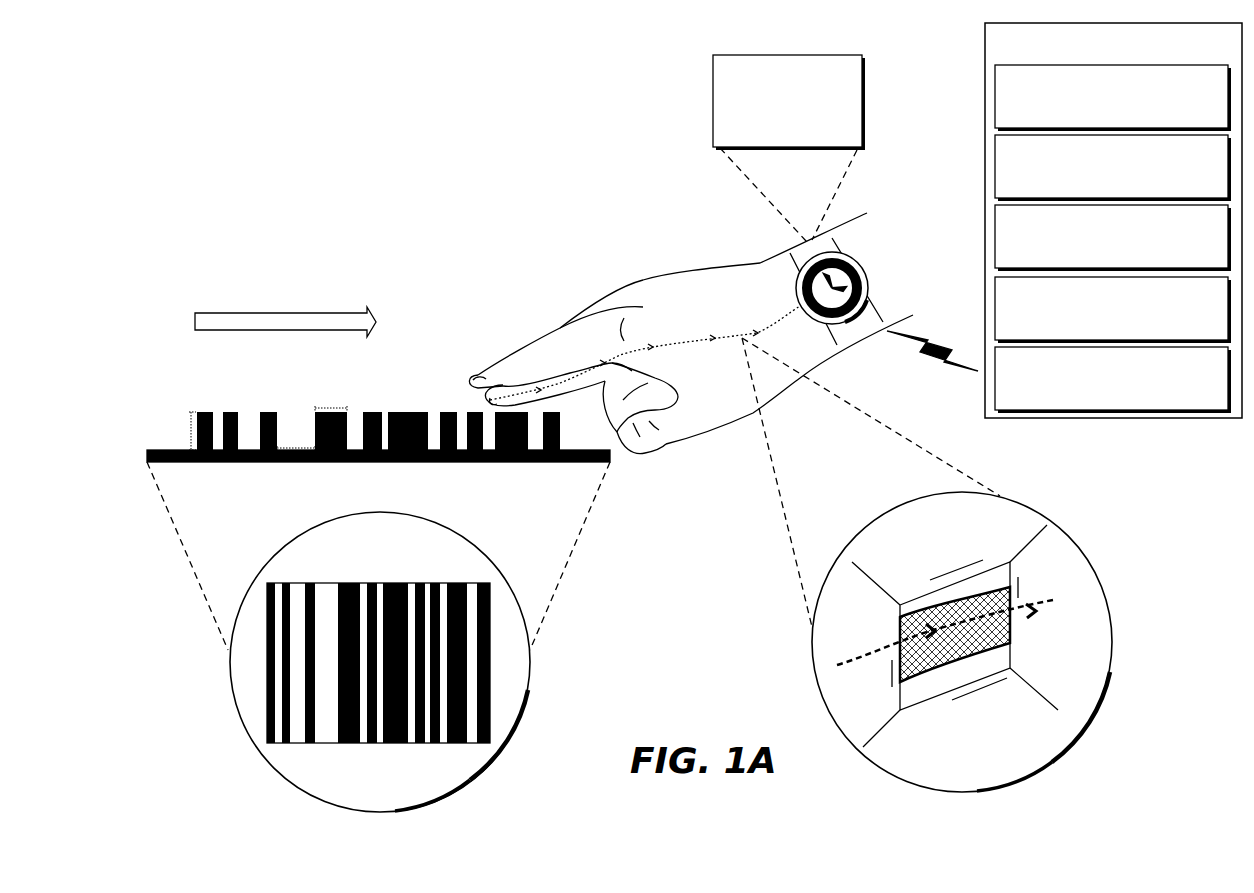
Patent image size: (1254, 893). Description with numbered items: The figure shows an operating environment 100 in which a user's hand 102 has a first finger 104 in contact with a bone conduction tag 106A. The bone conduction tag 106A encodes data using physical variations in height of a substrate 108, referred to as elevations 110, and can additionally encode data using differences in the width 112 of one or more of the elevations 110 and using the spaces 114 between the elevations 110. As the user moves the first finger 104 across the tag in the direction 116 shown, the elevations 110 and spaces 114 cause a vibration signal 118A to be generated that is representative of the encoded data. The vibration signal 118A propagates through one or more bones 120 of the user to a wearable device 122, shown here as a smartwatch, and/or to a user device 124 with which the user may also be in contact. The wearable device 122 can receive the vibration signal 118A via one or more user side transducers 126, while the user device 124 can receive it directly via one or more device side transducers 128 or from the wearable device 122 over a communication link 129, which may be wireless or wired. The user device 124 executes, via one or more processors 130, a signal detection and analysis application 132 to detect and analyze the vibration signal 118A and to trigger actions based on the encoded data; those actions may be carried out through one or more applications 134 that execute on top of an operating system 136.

The operating environment 100 is at (210, 64).
The user's hand 102 is at (717, 270).
The first finger 104 is at (567, 326).
The bone conduction tag 106A is at (182, 358).
The substrate 108 is at (148, 453).
The elevations 110 is at (174, 430).
The width 112 is at (341, 389).
The spaces 114 is at (295, 428).
The direction 116 is at (325, 313).
The vibration signal 118A is at (686, 343).
The bones 120 is at (910, 683).
The wearable device 122 is at (852, 258).
The user device 124 is at (1113, 220).
The user side transducers 126 is at (789, 148).
The device side transducers 128 is at (1113, 98).
The communication link 129 is at (940, 335).
The processors 130 is at (1113, 168).
The signal detection and analysis application 132 is at (1113, 238).
The applications 134 is at (1113, 310).
The operating system 136 is at (1113, 380).